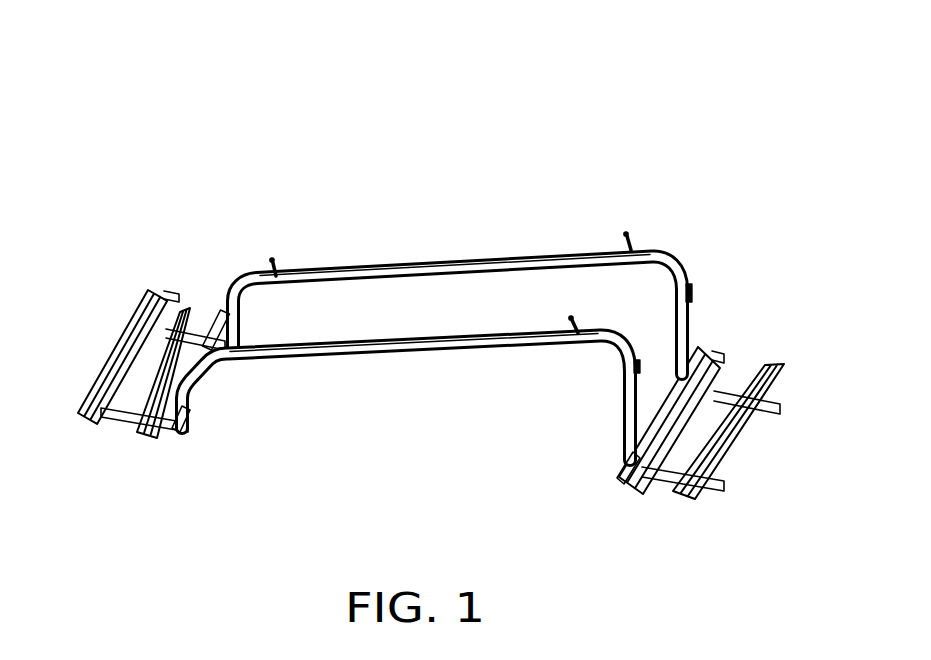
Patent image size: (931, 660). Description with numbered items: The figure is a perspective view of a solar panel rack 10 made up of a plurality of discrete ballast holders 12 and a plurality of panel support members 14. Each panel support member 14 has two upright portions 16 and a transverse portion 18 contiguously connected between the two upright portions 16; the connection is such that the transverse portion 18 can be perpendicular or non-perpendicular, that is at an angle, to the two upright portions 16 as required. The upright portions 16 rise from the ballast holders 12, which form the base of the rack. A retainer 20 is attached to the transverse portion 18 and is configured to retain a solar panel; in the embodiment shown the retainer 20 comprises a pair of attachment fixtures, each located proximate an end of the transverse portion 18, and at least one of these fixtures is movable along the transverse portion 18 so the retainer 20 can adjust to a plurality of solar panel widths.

The solar panel rack 10 is at (476, 94).
The ballast holder 12 is at (135, 420).
The panel support member 14 is at (419, 248).
The upright portion 16 is at (227, 308).
The transverse portion 18 is at (503, 257).
The retainer 20 is at (632, 243).